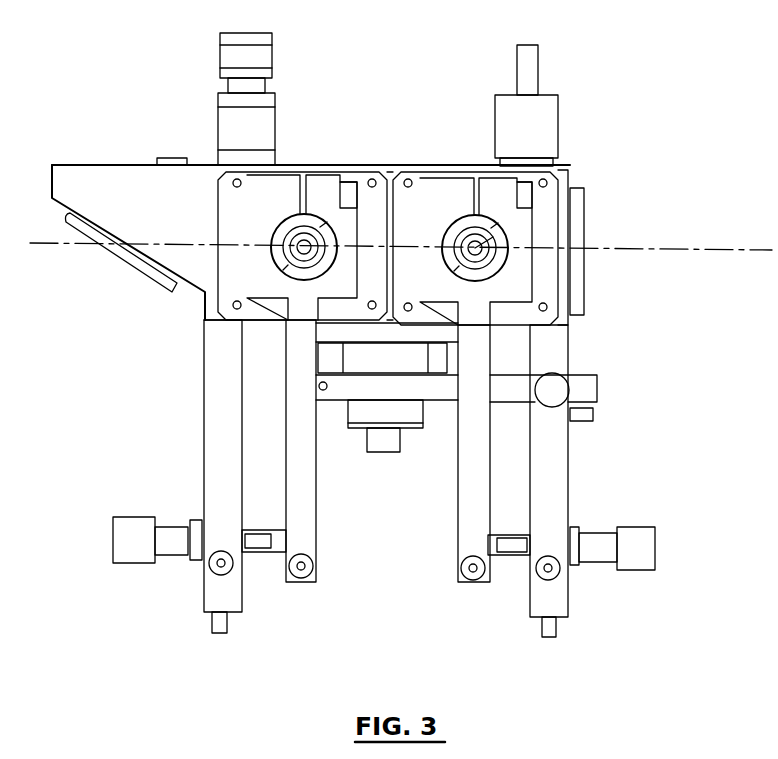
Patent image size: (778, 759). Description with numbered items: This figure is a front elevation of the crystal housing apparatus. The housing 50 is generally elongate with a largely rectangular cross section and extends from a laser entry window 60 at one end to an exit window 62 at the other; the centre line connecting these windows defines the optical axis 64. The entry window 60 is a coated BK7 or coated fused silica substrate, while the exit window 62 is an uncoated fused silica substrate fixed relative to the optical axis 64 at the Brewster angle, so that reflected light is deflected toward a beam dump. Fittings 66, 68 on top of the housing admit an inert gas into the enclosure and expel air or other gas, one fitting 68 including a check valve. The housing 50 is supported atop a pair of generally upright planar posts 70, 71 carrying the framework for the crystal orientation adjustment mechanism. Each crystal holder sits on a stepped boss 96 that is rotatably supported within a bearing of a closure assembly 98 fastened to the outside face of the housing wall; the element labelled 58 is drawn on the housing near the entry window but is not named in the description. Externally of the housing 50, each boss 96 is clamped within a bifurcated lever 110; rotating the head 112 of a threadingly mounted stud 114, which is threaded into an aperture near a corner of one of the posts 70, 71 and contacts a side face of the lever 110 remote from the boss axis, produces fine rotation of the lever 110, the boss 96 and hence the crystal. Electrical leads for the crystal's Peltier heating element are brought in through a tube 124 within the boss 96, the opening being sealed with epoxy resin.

The housing 50 is at (84, 156).
The left mounting plate 58 is at (187, 230).
The laser entry window 60 is at (587, 190).
The exit window 62 is at (127, 255).
The optical axis 64 is at (703, 253).
The fitting 66 is at (545, 131).
The fitting 68 is at (268, 62).
The post 70 is at (220, 360).
The post 71 is at (562, 498).
The stepped boss 96 is at (492, 234).
The closure assembly 98 is at (548, 278).
The bifurcated lever 110 is at (513, 405).
The head 112 is at (568, 377).
The stud 114 is at (512, 557).
The tube 124 is at (490, 272).